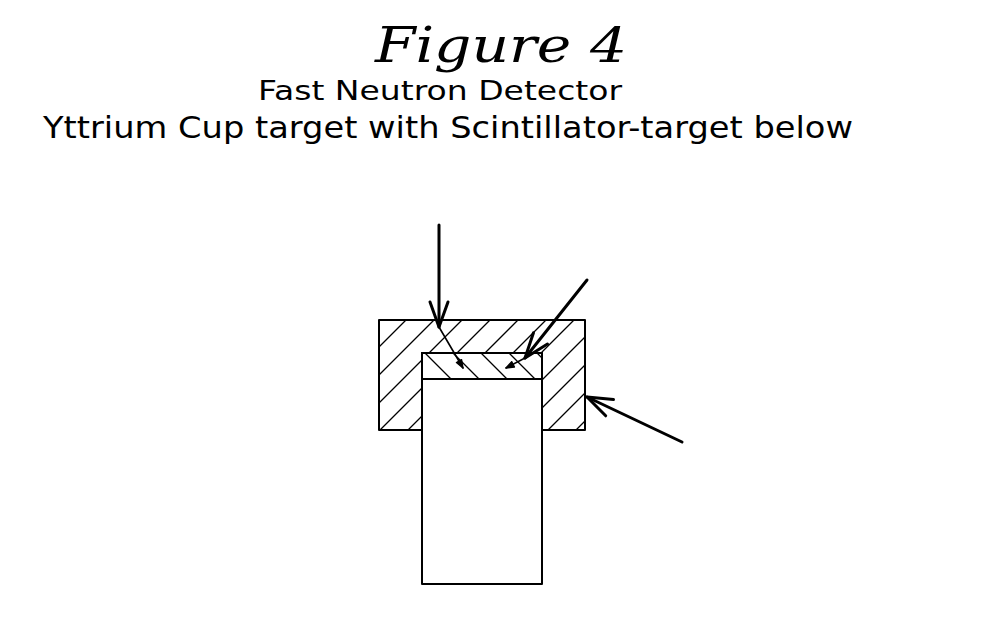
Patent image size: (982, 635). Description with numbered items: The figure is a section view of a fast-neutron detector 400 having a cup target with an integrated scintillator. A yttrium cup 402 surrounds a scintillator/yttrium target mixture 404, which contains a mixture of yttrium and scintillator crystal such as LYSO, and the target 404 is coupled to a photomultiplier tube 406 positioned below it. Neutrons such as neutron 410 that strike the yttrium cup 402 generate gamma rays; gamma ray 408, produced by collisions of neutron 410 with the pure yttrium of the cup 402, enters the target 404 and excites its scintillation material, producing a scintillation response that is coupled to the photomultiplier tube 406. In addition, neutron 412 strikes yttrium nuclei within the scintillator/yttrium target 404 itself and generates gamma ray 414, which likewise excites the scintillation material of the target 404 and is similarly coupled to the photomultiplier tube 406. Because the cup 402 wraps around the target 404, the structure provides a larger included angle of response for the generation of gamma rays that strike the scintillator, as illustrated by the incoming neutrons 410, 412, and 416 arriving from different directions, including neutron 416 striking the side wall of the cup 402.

The fast neutron detector 400 is at (200, 260).
The yttrium cup 402 is at (387, 353).
The scintillator/yttrium target mixture 404 is at (430, 362).
The photomultiplier tube 406 is at (421, 500).
The gamma ray 408 is at (453, 345).
The neutron 410 is at (438, 250).
The neutron 412 is at (572, 308).
The gamma ray 414 is at (512, 367).
The neutron 416 is at (662, 441).